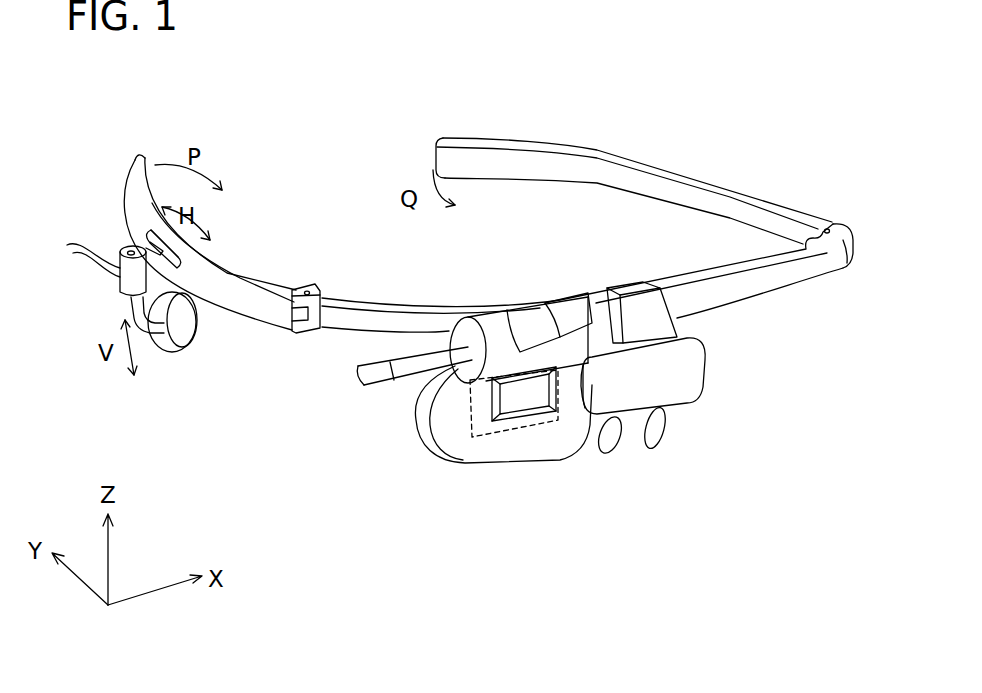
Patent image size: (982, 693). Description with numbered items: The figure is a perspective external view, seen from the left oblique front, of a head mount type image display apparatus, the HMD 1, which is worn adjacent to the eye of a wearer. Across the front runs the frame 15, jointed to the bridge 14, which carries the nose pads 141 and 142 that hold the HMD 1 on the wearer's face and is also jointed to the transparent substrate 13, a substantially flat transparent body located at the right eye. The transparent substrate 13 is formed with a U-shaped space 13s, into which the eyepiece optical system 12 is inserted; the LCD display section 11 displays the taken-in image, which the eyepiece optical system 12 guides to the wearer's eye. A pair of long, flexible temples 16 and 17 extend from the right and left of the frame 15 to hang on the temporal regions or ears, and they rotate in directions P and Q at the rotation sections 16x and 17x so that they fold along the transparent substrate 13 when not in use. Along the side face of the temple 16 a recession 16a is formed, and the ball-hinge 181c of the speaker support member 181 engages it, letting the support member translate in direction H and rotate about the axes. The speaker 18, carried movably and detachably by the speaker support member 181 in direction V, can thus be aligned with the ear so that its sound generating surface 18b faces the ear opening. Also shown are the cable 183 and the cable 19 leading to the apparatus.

The HMD 1 is at (377, 111).
The LCD display section 11 is at (560, 310).
The eyepiece optical system 12 is at (533, 392).
The transparent substrate 13 is at (503, 448).
The space 13s is at (462, 415).
The bridge 14 is at (676, 428).
The nose pad 141 is at (606, 453).
The nose pad 142 is at (667, 430).
The frame 15 is at (368, 298).
The temple 16 is at (258, 290).
The recession 16a is at (187, 270).
The rotation section 16x is at (307, 289).
The temple 17 is at (590, 150).
The rotation section 17x is at (826, 228).
The speaker 18 is at (200, 359).
The sound generating surface 18b is at (200, 332).
The speaker support member 181 is at (130, 280).
The ball-hinge 181c is at (140, 246).
The earphone cable 183 is at (69, 255).
The connection cable 19 is at (415, 366).